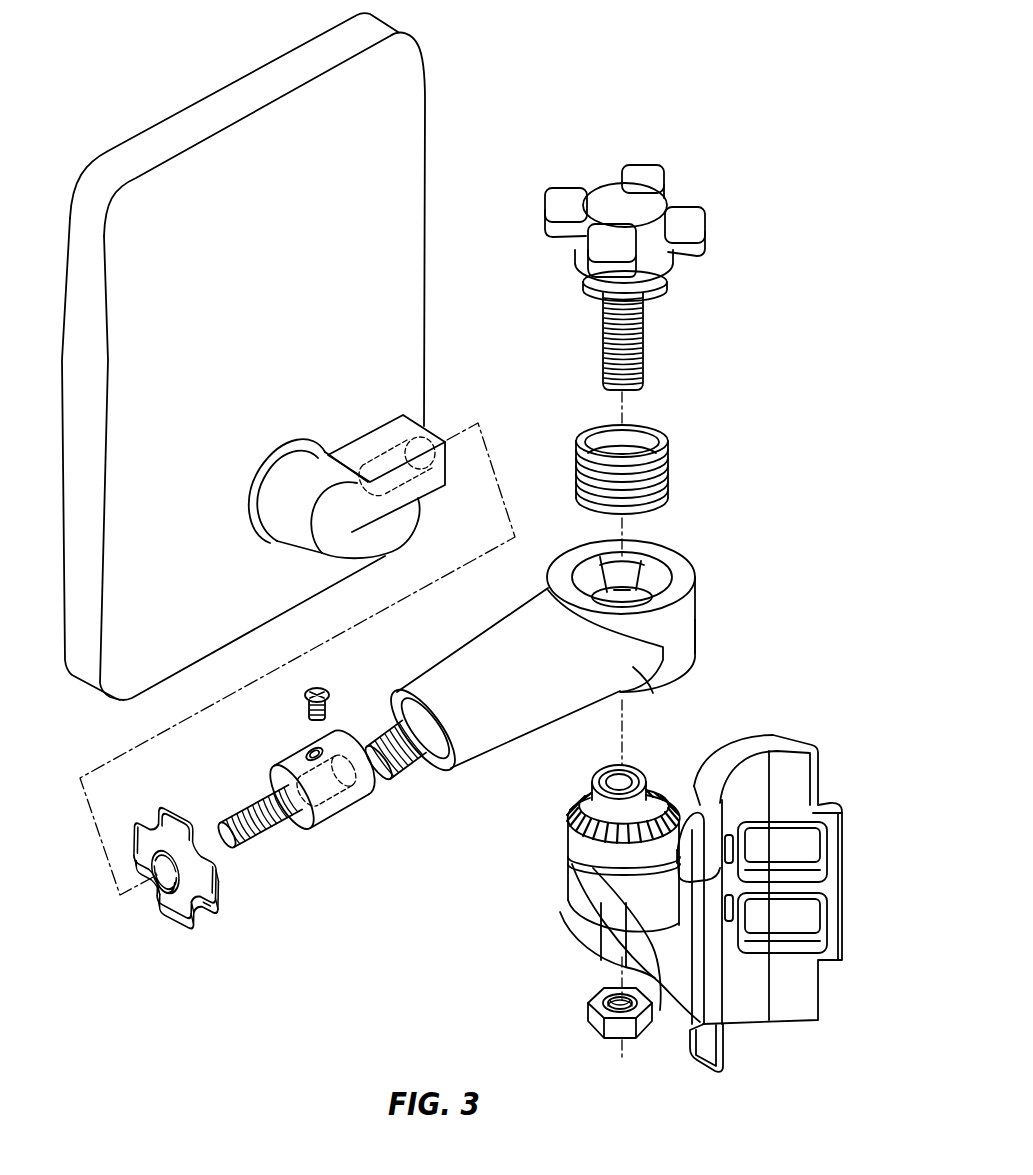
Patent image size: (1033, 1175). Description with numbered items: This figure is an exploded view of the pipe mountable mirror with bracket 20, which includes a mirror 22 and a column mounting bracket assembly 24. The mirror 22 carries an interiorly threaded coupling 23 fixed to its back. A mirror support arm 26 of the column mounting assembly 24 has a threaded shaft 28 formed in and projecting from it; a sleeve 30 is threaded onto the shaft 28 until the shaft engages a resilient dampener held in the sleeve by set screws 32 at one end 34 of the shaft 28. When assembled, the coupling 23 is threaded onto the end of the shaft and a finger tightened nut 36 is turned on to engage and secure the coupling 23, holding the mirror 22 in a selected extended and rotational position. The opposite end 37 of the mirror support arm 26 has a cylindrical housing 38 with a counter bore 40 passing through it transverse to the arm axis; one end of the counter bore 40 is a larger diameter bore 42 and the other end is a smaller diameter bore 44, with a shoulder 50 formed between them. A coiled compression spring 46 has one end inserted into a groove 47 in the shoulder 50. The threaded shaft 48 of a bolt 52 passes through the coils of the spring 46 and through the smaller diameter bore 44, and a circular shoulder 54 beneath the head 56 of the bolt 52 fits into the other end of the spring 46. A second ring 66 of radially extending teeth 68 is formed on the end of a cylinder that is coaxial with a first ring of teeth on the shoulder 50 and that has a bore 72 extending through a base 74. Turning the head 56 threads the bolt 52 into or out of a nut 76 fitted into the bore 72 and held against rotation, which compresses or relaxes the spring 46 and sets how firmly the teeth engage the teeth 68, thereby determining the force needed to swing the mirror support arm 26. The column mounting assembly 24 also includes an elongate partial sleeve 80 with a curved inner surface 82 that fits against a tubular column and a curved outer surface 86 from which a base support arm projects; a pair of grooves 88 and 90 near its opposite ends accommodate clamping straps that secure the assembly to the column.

The pipe mountable mirror with bracket 20 is at (557, 112).
The mirror 22 is at (260, 314).
The interiorly threaded coupling 23 is at (328, 537).
The column mounting bracket assembly 24 is at (808, 724).
The mirror support arm 26 is at (568, 680).
The threaded shaft 28 is at (410, 767).
The sleeve 30 is at (342, 817).
The set screws 32 is at (303, 697).
The one end of the shaft 34 is at (250, 803).
The finger tightened nut 36 is at (163, 893).
The opposite end of the mirror support arm 37 is at (653, 687).
The cylindrical housing 38 is at (692, 615).
The counter bore 40 is at (630, 572).
The larger diameter bore 42 is at (667, 578).
The smaller diameter bore 44 is at (693, 647).
The coiled compression spring 46 is at (668, 455).
The groove 47 is at (600, 557).
The threaded shaft of bolt 48 is at (640, 355).
The shoulder 50 is at (640, 583).
The bolt 52 is at (725, 219).
The circular shoulder 54 is at (663, 283).
The head of bolt 56 is at (652, 203).
The second ring of teeth 66 is at (575, 840).
The radially extending teeth 68 is at (573, 797).
The bore 72 is at (630, 768).
The base 74 is at (592, 850).
The nut 76 is at (587, 1017).
The elongate partial sleeve 80 is at (820, 748).
The curved inner surface 82 is at (795, 777).
The curved outer surface 86 is at (627, 892).
The groove 88 is at (693, 807).
The groove 90 is at (692, 1040).